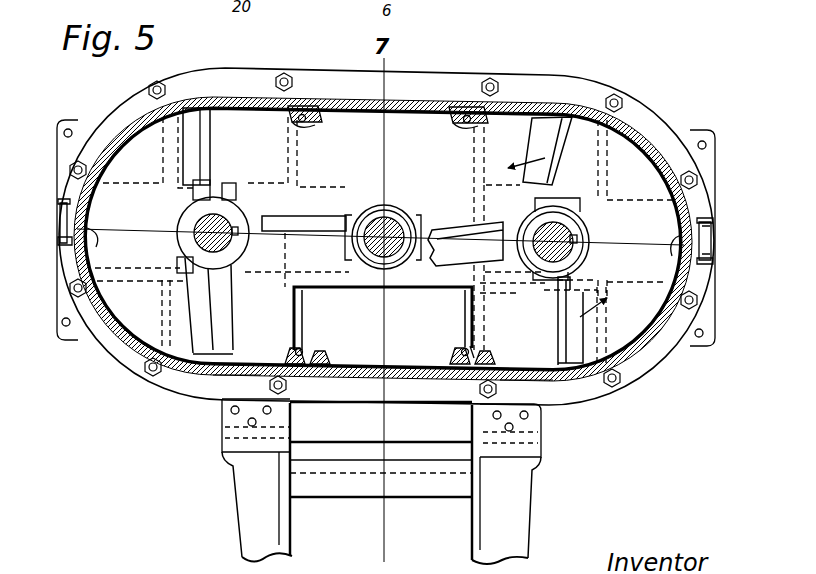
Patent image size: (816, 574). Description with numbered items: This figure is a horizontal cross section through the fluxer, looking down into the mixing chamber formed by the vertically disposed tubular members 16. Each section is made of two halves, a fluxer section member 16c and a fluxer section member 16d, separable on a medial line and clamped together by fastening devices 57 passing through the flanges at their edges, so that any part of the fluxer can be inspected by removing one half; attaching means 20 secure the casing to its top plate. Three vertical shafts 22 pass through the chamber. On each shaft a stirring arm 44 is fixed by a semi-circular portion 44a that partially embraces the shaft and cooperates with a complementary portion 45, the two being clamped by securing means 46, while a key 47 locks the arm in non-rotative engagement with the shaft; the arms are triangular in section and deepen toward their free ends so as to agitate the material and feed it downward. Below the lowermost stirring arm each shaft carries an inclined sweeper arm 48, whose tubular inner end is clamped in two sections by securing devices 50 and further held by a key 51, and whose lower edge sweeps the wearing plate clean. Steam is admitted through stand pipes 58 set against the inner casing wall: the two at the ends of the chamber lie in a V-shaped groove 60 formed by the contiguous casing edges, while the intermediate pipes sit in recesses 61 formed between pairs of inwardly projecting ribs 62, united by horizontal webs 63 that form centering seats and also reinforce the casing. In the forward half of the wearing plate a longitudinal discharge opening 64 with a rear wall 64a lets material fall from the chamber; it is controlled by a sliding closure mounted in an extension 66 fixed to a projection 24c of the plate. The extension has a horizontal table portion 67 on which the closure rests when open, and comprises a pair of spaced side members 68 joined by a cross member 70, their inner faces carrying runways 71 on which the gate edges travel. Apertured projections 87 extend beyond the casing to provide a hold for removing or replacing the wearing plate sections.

The tubular member 16 is at (532, 88).
The fluxer section member 16c is at (55, 233).
The fluxer section member 16d is at (632, 127).
The attaching means 20 is at (250, 40).
The shaft 22 is at (386, 215).
The projection 24c is at (574, 440).
The stirring arm 44 is at (452, 228).
The semi-circular portion 44a is at (238, 195).
The complementary portion 45 is at (178, 224).
The securing means 46 is at (190, 148).
The key 47 is at (243, 236).
The sweeper arm 48 is at (205, 128).
The securing device 50 is at (315, 287).
The key 51 is at (380, 205).
The fastening device 57 is at (712, 222).
The stand pipe 58 is at (305, 124).
The V-shaped groove 60 is at (87, 245).
The recess 61 is at (312, 97).
The rib 62 is at (420, 97).
The web 63 is at (478, 350).
The opening 64 is at (383, 318).
The rear wall 64a is at (426, 292).
The extension 66 is at (230, 489).
The table portion 67 is at (381, 422).
The side member 68 is at (290, 545).
The cross member 70 is at (415, 488).
The runway 71 is at (302, 318).
The apertured projection 87 is at (70, 124).